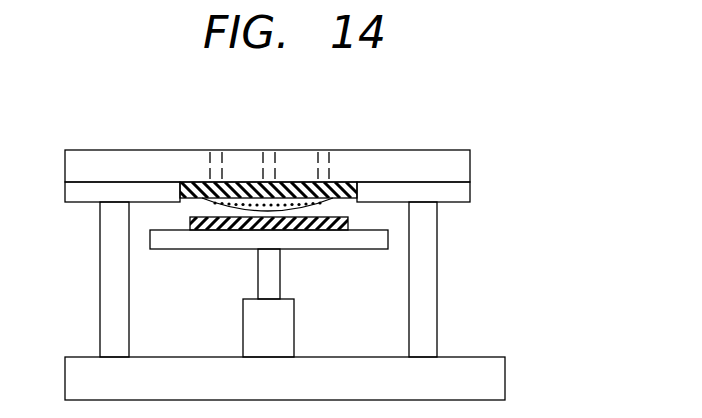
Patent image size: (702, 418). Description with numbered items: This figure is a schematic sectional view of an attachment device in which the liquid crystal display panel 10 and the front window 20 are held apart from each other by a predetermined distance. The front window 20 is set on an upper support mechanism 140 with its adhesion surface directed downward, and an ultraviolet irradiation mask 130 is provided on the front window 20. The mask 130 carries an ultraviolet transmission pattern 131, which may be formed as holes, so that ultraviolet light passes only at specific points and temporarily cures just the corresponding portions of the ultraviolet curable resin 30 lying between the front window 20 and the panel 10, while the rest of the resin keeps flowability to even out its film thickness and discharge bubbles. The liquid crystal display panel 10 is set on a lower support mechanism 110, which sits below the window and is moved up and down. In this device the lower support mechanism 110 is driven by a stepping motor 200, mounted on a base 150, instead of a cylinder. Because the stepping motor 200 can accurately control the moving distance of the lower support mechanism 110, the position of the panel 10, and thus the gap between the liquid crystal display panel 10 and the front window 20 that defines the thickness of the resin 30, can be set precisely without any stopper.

The liquid crystal display panel 10 is at (193, 249).
The front window 20 is at (195, 183).
The ultraviolet curable resin 30 is at (320, 200).
The lower support mechanism 110 is at (350, 238).
The ultraviolet irradiation mask 130 is at (95, 166).
The ultraviolet transmission pattern 131 is at (326, 149).
The upper support mechanism 140 is at (462, 193).
The base 150 is at (467, 365).
The stepping motor 200 is at (280, 326).